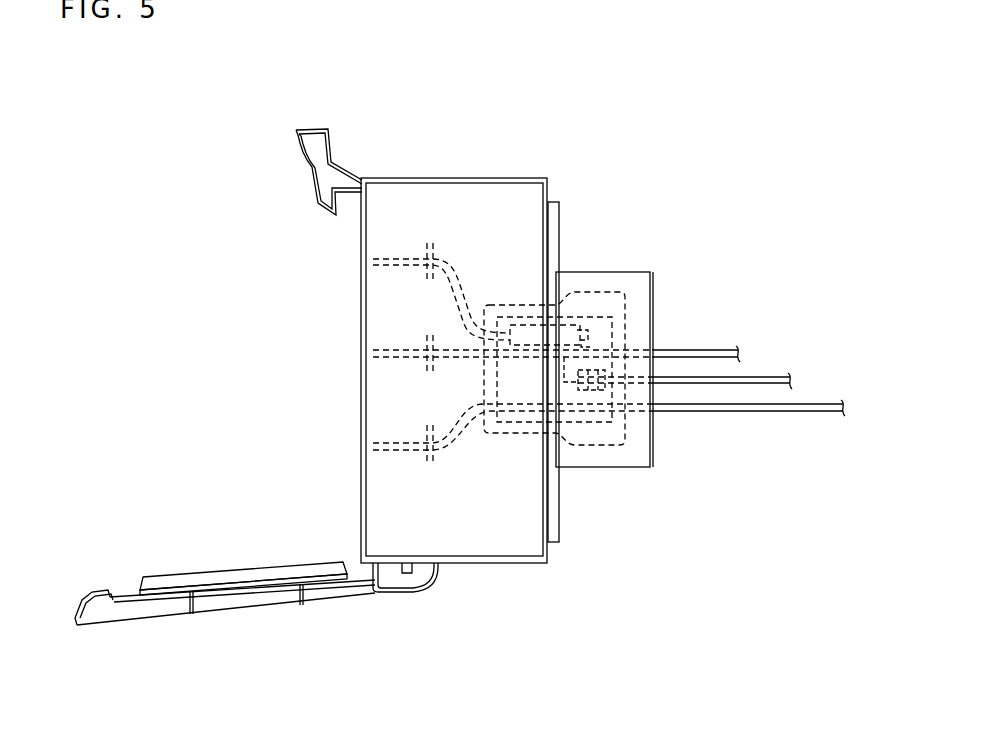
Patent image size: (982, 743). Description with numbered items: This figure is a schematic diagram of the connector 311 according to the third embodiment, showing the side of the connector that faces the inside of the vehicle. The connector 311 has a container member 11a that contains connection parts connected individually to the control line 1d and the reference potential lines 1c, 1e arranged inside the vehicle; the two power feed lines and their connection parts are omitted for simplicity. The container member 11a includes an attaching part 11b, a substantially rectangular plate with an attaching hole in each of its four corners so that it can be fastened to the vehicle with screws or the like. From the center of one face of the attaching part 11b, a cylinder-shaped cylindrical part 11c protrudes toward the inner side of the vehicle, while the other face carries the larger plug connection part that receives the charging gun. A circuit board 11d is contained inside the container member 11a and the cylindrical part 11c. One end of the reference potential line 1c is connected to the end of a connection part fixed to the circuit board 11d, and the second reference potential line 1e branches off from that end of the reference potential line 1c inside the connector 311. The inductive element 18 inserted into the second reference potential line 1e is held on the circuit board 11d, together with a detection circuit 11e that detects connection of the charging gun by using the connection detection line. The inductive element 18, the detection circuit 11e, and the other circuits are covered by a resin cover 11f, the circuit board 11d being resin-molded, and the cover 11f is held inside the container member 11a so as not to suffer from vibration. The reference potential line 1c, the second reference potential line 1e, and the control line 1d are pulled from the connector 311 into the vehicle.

The connector 311 is at (503, 162).
The container member 11a is at (410, 176).
The attaching part 11b is at (552, 200).
The cylindrical part 11c is at (634, 270).
The circuit board 11d is at (625, 327).
The detection circuit 11e is at (573, 335).
The cover 11f is at (595, 423).
The inductive element 18 is at (590, 413).
The reference potential line 1c is at (690, 348).
The second reference potential line 1e is at (763, 376).
The control line 1d is at (817, 401).